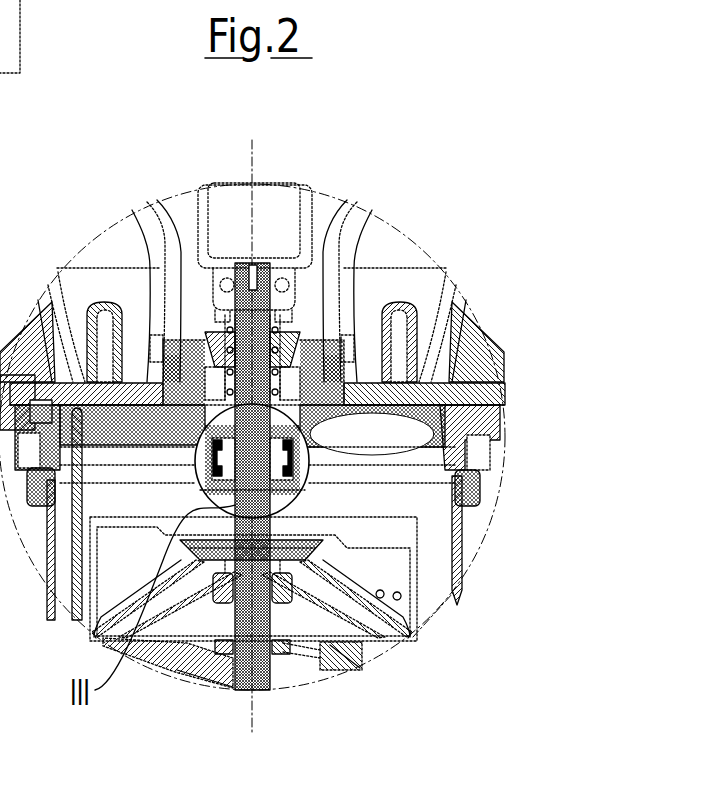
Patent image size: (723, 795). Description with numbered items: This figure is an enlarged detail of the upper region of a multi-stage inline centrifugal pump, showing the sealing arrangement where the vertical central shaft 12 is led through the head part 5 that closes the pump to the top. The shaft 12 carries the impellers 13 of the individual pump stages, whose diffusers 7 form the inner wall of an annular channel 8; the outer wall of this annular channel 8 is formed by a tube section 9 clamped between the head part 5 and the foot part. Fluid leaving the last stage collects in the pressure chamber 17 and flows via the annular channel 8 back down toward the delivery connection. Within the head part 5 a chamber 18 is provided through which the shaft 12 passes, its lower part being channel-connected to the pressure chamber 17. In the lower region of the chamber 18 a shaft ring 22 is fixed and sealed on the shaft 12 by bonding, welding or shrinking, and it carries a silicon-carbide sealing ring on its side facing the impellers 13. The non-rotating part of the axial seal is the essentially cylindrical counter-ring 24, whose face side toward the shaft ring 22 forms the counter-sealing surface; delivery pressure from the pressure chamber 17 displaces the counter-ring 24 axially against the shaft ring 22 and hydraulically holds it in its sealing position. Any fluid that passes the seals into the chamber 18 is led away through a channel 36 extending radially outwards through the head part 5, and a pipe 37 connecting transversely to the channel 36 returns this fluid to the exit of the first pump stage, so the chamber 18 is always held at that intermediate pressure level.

The channel 36 is at (111, 386).
The chamber 18 is at (293, 388).
The shaft ring 22 is at (300, 428).
The counter-ring 24 is at (296, 458).
The shaft 12 is at (262, 688).
The head part 5 is at (472, 490).
The tube section 9 is at (460, 537).
The annular channel 8 is at (432, 580).
The pressure chamber 17 is at (352, 532).
The diffuser 7 is at (414, 636).
The impeller 13 is at (352, 658).
The pipe 37 is at (82, 566).